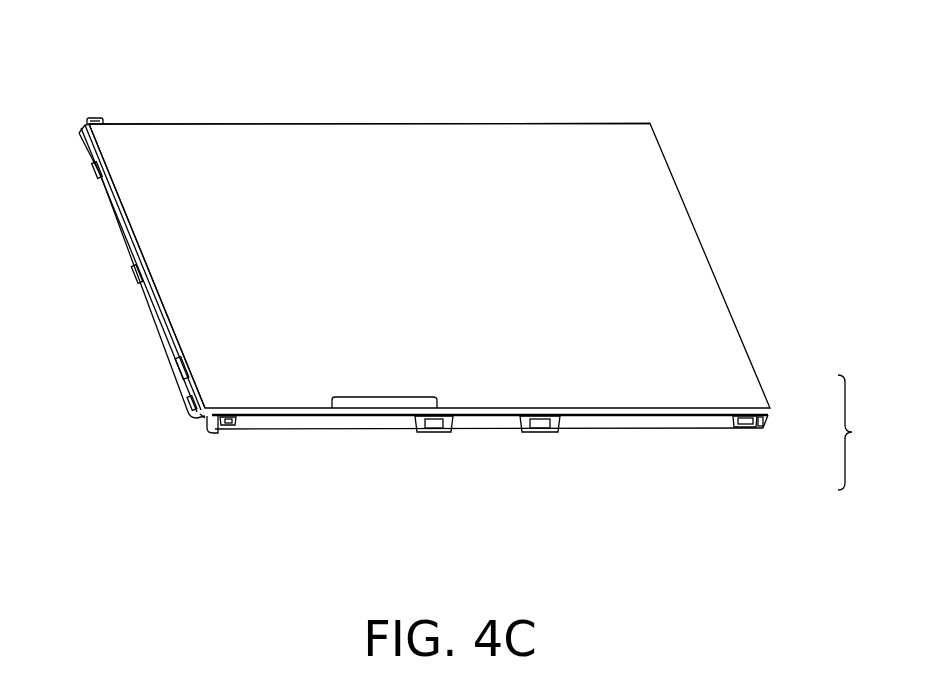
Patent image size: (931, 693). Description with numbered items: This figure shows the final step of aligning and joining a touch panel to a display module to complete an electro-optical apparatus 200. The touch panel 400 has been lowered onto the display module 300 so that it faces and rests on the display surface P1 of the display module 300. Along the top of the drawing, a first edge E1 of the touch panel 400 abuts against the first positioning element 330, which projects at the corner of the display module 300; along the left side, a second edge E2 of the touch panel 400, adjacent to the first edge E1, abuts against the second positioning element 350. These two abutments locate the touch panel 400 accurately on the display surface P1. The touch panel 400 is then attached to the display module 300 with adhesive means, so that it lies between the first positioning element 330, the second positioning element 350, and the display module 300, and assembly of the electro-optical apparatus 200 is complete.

The electro-optical apparatus 200 is at (869, 432).
The display module 300 is at (712, 420).
The first positioning element 330 is at (100, 118).
The second positioning element 350 is at (88, 147).
The touch panel 400 is at (728, 373).
The first edge E1 is at (244, 123).
The second edge E2 is at (124, 219).
The display surface P1 is at (668, 415).